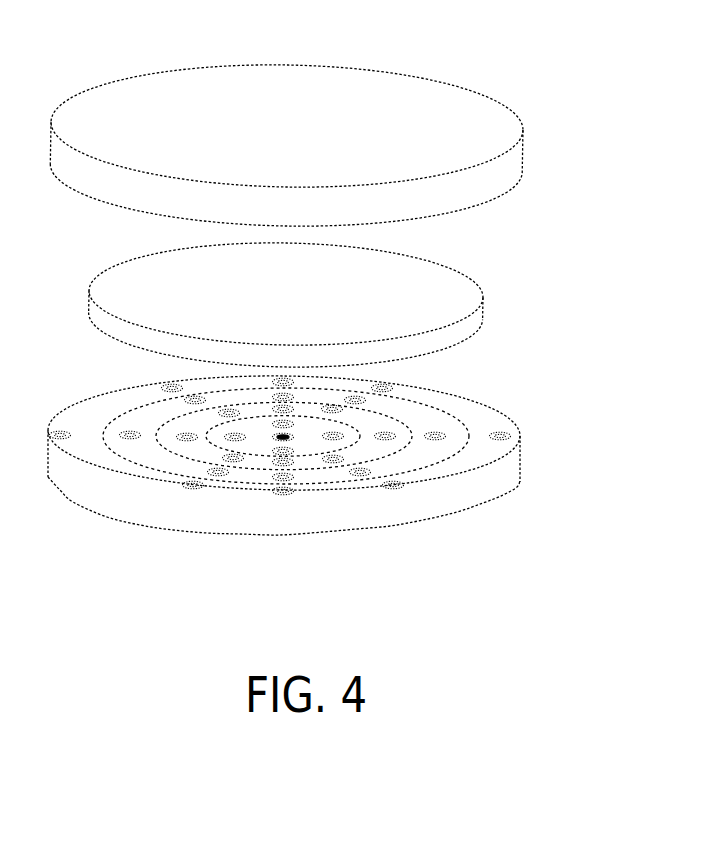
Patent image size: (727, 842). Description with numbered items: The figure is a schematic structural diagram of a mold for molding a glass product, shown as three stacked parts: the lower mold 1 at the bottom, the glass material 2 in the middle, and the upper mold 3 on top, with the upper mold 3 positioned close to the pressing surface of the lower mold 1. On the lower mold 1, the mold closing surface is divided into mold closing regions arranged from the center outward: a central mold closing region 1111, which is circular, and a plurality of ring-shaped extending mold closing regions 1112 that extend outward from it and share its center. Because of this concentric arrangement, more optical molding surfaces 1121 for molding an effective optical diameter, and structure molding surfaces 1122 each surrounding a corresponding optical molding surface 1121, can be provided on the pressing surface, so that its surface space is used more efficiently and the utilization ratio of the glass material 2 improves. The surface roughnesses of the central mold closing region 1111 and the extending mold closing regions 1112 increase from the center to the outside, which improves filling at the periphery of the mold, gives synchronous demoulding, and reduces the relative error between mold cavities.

The lower mold 1 is at (460, 490).
The glass material 2 is at (442, 290).
The upper mold 3 is at (432, 118).
The central mold closing region 1111 is at (312, 443).
The extending mold closing region 1112 is at (168, 438).
The optical molding surface 1121 is at (392, 436).
The structure molding surface 1122 is at (340, 378).